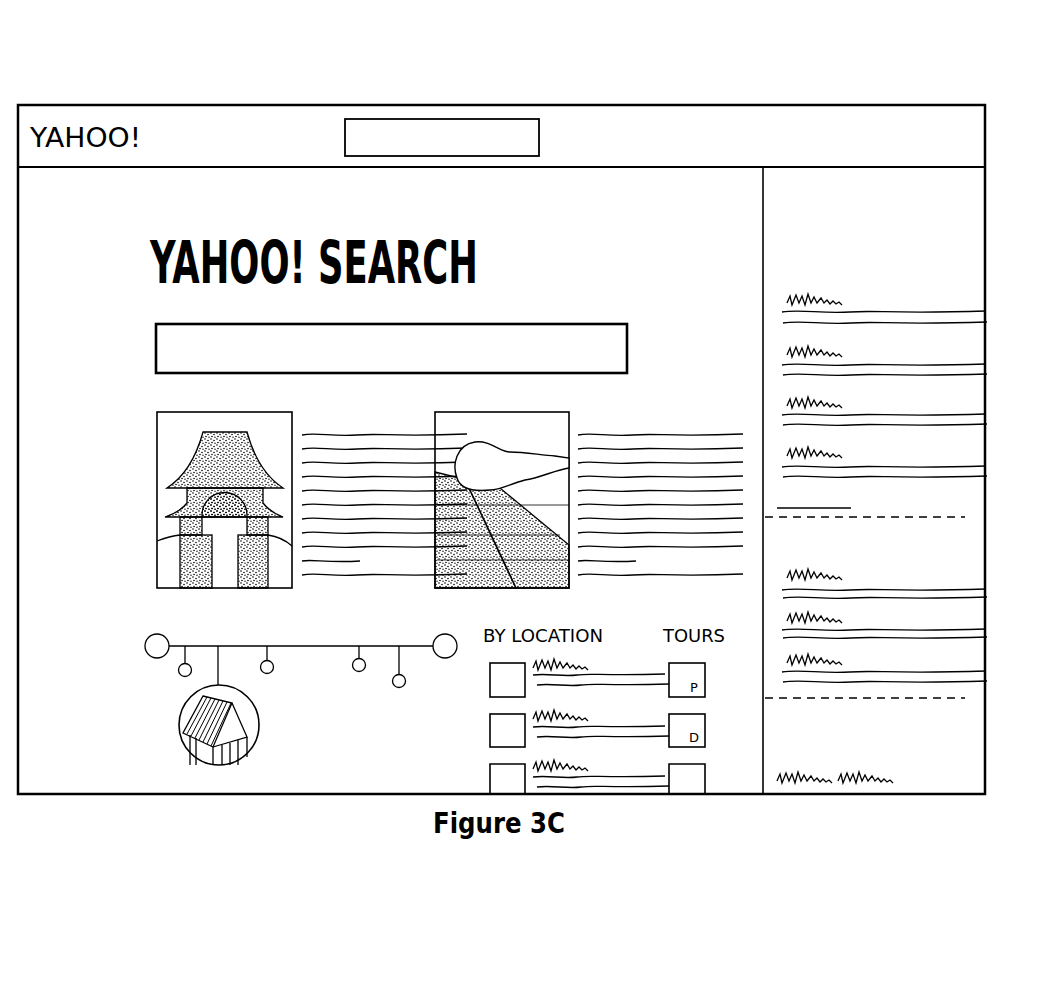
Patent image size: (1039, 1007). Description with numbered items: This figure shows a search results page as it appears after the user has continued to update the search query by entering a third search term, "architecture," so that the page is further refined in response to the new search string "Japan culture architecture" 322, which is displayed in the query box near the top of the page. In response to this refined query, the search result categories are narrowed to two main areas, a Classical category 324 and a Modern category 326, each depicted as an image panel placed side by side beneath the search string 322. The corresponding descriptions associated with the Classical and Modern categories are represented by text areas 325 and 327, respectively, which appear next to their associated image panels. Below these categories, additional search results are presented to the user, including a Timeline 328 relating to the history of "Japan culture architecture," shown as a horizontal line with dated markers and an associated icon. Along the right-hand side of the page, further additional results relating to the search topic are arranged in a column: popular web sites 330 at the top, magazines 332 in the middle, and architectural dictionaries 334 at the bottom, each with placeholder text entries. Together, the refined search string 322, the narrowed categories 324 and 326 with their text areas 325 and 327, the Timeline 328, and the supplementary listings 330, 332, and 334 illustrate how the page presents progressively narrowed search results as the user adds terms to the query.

The search string 322 is at (628, 352).
The Classical category 324 is at (233, 412).
The text area for Classical category 325 is at (356, 575).
The Modern category 326 is at (511, 412).
The text area for Modern category 327 is at (643, 575).
The Timeline 328 is at (156, 613).
The popular web sites 330 is at (957, 244).
The magazines 332 is at (893, 548).
The architectural dictionaries 334 is at (935, 728).